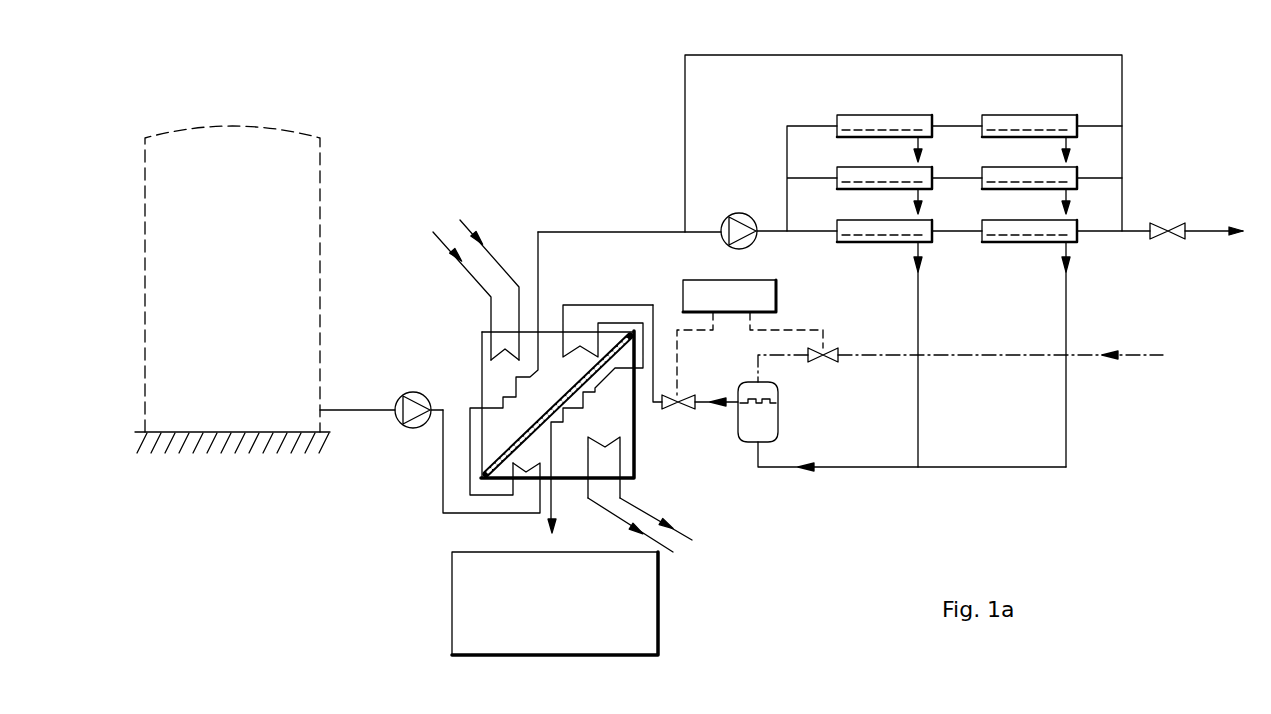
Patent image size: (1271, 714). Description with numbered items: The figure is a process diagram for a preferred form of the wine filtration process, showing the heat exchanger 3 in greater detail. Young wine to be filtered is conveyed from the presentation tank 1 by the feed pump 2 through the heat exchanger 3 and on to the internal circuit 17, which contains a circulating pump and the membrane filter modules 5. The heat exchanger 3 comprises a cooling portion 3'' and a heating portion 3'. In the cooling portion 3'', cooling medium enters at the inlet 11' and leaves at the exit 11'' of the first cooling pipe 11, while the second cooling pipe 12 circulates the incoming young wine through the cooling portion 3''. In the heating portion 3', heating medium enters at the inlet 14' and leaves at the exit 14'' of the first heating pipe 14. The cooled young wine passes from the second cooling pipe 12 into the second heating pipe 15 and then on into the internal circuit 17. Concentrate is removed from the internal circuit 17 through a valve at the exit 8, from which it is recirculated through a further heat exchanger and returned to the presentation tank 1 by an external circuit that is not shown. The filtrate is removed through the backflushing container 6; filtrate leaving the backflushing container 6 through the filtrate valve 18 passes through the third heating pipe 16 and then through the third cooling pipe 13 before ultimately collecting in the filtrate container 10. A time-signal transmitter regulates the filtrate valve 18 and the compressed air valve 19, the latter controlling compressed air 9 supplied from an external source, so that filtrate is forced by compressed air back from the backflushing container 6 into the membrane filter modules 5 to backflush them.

The presentation tank 1 is at (330, 177).
The feed pump 2 is at (410, 393).
The heat exchanger 3 is at (466, 405).
The heating portion 3' is at (537, 357).
The cooling portion 3'' is at (579, 404).
The membrane filter modules 5 is at (878, 115).
The backflushing container 6 is at (748, 442).
The exit 8 is at (1207, 228).
The compressed air 9 is at (1147, 355).
The filtrate container 10 is at (647, 597).
The first cooling pipe 11 is at (610, 452).
The inlet 11' is at (671, 514).
The exit 11'' is at (661, 537).
The second cooling pipe 12 is at (525, 468).
The third cooling pipe 13 is at (560, 393).
The first heating pipe 14 is at (515, 306).
The inlet 14' is at (440, 280).
The exit 14'' is at (489, 279).
The second heating pipe 15 is at (532, 370).
The third heating pipe 16 is at (580, 346).
The internal circuit 17 is at (805, 36).
The filtrate valve 18 is at (680, 397).
The compressed air valve 19 is at (823, 357).